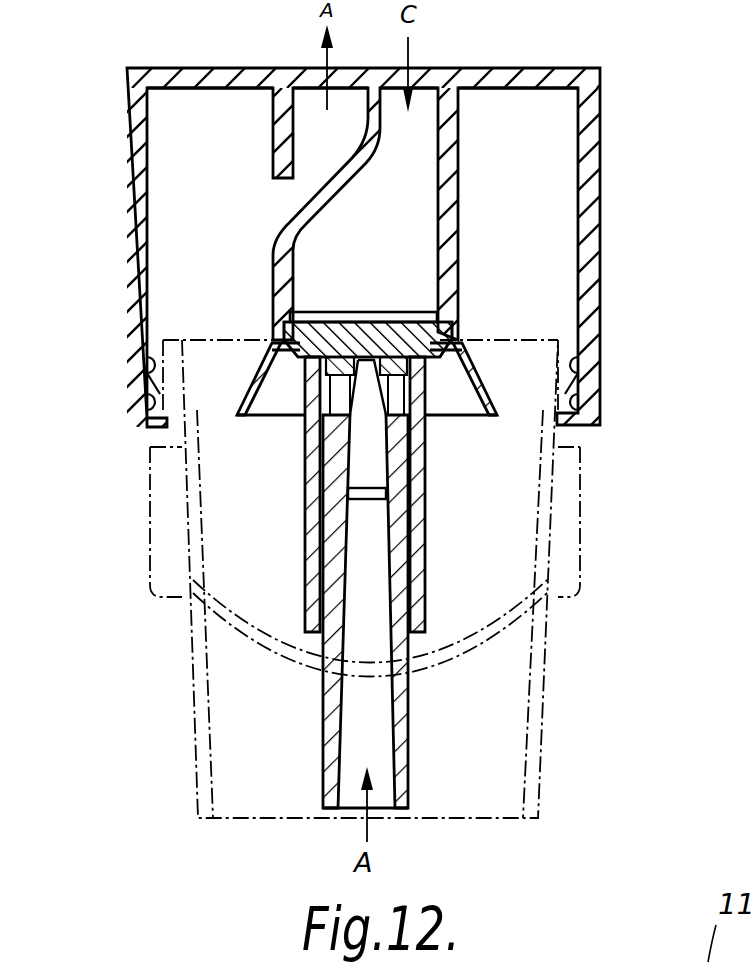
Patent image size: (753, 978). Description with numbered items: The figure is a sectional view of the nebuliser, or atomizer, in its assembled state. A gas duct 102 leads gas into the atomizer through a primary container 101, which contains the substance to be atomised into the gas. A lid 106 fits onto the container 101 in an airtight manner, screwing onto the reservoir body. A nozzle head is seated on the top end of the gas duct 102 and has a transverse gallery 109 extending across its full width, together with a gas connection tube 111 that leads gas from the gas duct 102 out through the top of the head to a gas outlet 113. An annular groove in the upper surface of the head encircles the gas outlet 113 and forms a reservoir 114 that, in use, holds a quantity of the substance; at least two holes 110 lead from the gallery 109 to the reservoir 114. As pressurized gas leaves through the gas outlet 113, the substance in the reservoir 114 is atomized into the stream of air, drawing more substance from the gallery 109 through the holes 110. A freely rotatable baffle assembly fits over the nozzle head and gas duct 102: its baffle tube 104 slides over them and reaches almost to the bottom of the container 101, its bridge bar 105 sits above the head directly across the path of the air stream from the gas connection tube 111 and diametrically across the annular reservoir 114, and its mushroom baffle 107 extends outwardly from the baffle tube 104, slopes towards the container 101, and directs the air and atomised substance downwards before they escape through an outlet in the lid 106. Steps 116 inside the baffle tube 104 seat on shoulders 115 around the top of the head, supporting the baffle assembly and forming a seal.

The primary container 101 is at (480, 637).
The gas duct 102 is at (323, 715).
The baffle tube 104 is at (305, 578).
The bridge bar 105 is at (412, 312).
The lid 106 is at (128, 262).
The mushroom baffle 107 is at (556, 390).
The transverse gallery 109 is at (305, 397).
The holes 110 is at (305, 380).
The gas connection tube 111 is at (365, 425).
The gas outlet 113 is at (360, 313).
The reservoir 114 is at (334, 370).
The shoulders 115 is at (463, 328).
The steps 116 is at (368, 339).